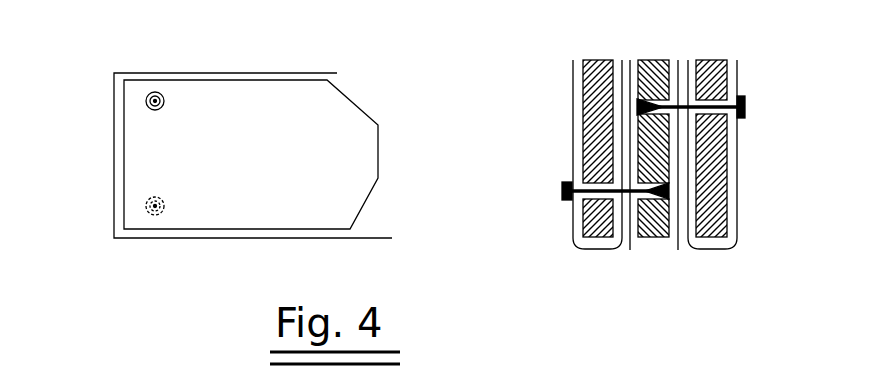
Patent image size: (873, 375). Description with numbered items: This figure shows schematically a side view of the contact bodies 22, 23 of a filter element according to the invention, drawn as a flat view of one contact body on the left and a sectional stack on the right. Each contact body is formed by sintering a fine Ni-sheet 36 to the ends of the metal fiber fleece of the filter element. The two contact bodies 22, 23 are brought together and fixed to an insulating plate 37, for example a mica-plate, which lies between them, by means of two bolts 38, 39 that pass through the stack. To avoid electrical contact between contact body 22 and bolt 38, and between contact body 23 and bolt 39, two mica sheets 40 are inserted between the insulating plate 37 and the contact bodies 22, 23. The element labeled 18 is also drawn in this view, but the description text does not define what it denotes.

The sheet 18 is at (367, 217).
The contact body 22 is at (622, 257).
The contact body 23 is at (742, 257).
The Ni-sheet 36 is at (302, 98).
The insulating plate 37 is at (660, 73).
The bolt 38 is at (153, 97).
The bolt 39 is at (148, 200).
The mica sheets 40 is at (630, 244).